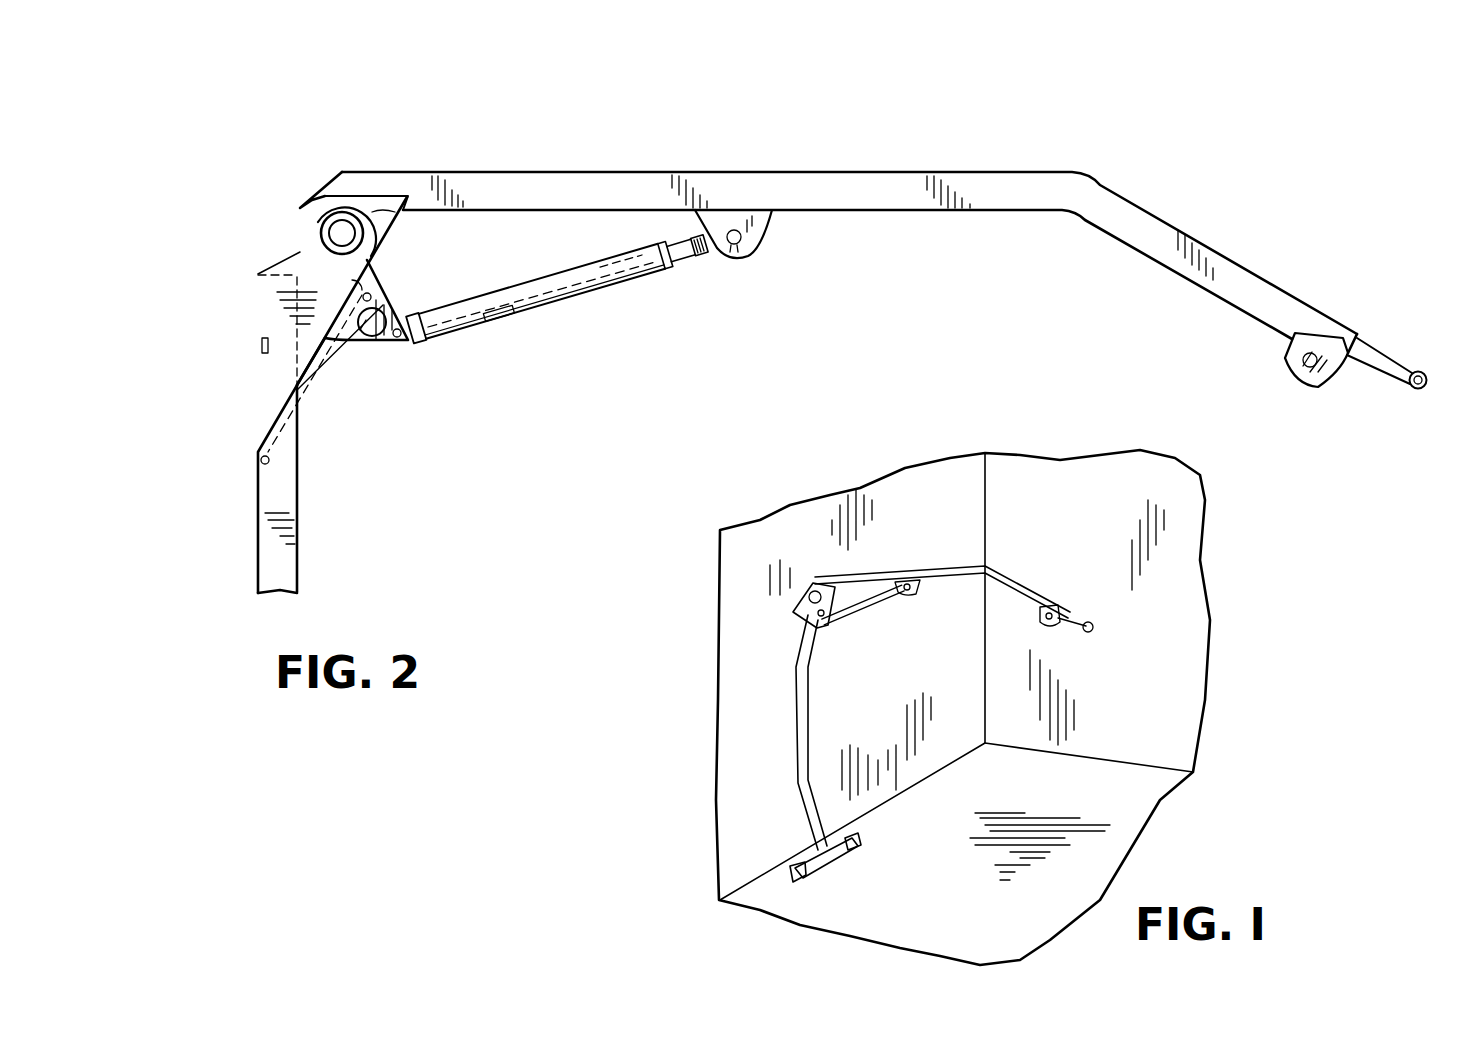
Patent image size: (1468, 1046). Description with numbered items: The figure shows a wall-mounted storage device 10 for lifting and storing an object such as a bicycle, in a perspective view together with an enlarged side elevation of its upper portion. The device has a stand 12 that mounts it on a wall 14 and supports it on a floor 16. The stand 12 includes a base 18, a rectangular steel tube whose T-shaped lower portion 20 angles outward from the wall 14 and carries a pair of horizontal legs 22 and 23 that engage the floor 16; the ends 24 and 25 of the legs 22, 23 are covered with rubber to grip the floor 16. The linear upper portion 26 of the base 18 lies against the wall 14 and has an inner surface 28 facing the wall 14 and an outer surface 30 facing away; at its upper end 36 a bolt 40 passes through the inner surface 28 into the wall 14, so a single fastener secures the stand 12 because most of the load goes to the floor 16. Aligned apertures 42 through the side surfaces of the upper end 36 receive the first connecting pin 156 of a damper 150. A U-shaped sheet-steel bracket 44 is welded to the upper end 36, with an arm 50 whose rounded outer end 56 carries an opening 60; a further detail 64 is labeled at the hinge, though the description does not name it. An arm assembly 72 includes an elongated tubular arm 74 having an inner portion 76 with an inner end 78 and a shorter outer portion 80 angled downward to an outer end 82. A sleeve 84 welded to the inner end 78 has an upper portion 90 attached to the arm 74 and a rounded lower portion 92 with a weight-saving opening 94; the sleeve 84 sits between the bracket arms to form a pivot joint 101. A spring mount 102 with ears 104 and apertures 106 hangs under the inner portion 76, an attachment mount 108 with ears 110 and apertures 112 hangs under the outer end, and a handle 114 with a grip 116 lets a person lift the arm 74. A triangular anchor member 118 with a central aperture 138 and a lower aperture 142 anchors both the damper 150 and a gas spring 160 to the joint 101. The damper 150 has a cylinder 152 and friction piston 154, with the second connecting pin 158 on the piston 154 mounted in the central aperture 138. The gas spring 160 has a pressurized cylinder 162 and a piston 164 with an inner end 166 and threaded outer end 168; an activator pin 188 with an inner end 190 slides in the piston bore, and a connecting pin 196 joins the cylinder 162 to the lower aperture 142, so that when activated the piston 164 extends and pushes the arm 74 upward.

In FIG. 2, the wall-mounted storage device 10 is at (458, 535).
In FIG. 1, the wall-mounted storage device 10 is at (797, 550).
In FIG. 2, the stand 12 is at (256, 560).
In FIG. 1, the stand 12 is at (790, 687).
In FIG. 1, the wall 14 is at (930, 755).
In FIG. 1, the floor 16 is at (1067, 783).
In FIG. 1, the base 18 is at (788, 775).
In FIG. 1, the lower portion 20 is at (807, 823).
In FIG. 1, the leg 22 is at (820, 874).
In FIG. 1, the leg 23 is at (848, 860).
In FIG. 1, the end 24 is at (793, 881).
In FIG. 1, the end 25 is at (861, 842).
In FIG. 2, the upper portion 26 is at (267, 490).
In FIG. 1, the upper portion 26 is at (797, 733).
In FIG. 2, the inner surface 28 is at (260, 457).
In FIG. 2, the outer surface 30 is at (294, 543).
In FIG. 2, the upper end 36 is at (262, 376).
In FIG. 2, the bolt 40 is at (262, 342).
In FIG. 2, the aligned apertures 42 is at (261, 463).
In FIG. 2, the bracket 44 is at (278, 253).
In FIG. 1, the bracket 44 is at (800, 612).
In FIG. 2, the arm 50 is at (297, 253).
In FIG. 2, the rounded outer end 56 is at (330, 207).
In FIG. 2, the opening 60 is at (323, 232).
In FIG. 2, the hinge pin 64 is at (343, 237).
In FIG. 2, the arm assembly 72 is at (1288, 154).
In FIG. 1, the arm assembly 72 is at (1041, 560).
In FIG. 2, the arm 74 is at (948, 172).
In FIG. 1, the arm 74 is at (964, 566).
In FIG. 2, the inner portion 76 is at (683, 185).
In FIG. 2, the inner end 78 is at (342, 170).
In FIG. 2, the outer portion 80 is at (1210, 254).
In FIG. 2, the outer end 82 is at (1318, 320).
In FIG. 2, the sleeve 84 is at (381, 200).
In FIG. 2, the upper portion 90 is at (406, 205).
In FIG. 2, the lower portion 92 is at (384, 234).
In FIG. 2, the opening 94 is at (382, 213).
In FIG. 2, the joint 101 is at (352, 202).
In FIG. 2, the spring mount 102 is at (764, 236).
In FIG. 2, the ear 104 is at (753, 220).
In FIG. 2, the aperture 106 is at (731, 250).
In FIG. 2, the attachment mount 108 is at (1283, 347).
In FIG. 2, the ear 110 is at (1288, 368).
In FIG. 2, the aperture 112 is at (1312, 368).
In FIG. 2, the handle 114 is at (1392, 352).
In FIG. 2, the handle grip 116 is at (1422, 398).
In FIG. 2, the anchor member 118 is at (356, 349).
In FIG. 1, the anchor member 118 is at (819, 628).
In FIG. 2, the central aperture 138 is at (371, 293).
In FIG. 2, the lower aperture 142 is at (394, 341).
In FIG. 2, the damper 150 is at (329, 402).
In FIG. 1, the damper 150 is at (810, 643).
In FIG. 2, the cylinder 152 is at (307, 407).
In FIG. 2, the piston 154 is at (260, 313).
In FIG. 2, the first connecting pin 156 is at (273, 460).
In FIG. 2, the second connecting pin 158 is at (443, 288).
In FIG. 2, the gas spring 160 is at (604, 291).
In FIG. 1, the gas spring 160 is at (882, 607).
In FIG. 2, the cylinder 162 is at (474, 325).
In FIG. 2, the piston 164 is at (650, 274).
In FIG. 2, the inner end 166 is at (498, 321).
In FIG. 2, the outer end 168 is at (700, 262).
In FIG. 2, the activator pin 188 is at (601, 265).
In FIG. 2, the inner end 190 is at (524, 323).
In FIG. 2, the connecting pin 196 is at (399, 344).